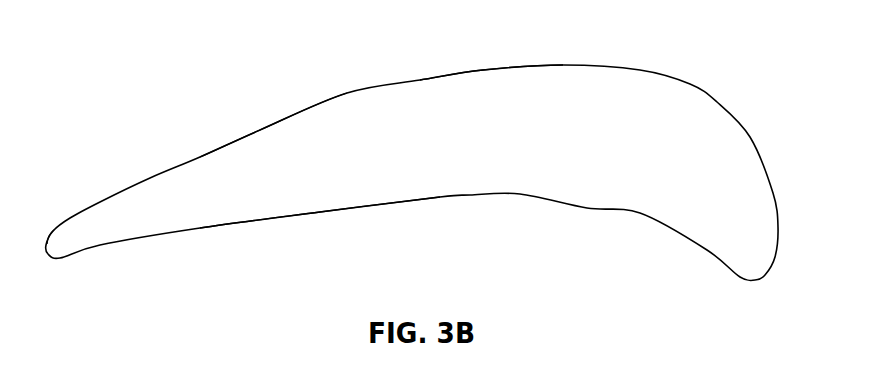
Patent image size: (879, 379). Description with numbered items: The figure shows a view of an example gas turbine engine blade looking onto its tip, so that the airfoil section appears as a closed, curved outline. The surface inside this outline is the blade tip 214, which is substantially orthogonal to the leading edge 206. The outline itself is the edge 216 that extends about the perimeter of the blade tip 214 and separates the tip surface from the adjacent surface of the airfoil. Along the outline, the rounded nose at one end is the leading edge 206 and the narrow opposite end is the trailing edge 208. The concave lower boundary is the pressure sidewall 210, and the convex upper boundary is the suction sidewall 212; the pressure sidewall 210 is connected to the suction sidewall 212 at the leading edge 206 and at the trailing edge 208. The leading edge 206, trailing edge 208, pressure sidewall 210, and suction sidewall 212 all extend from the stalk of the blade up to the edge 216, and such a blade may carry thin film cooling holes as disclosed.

The leading edge 206 is at (764, 101).
The trailing edge 208 is at (41, 220).
The pressure sidewall 210 is at (439, 221).
The suction sidewall 212 is at (311, 82).
The blade tip 214 is at (494, 153).
The edge 216 is at (483, 70).